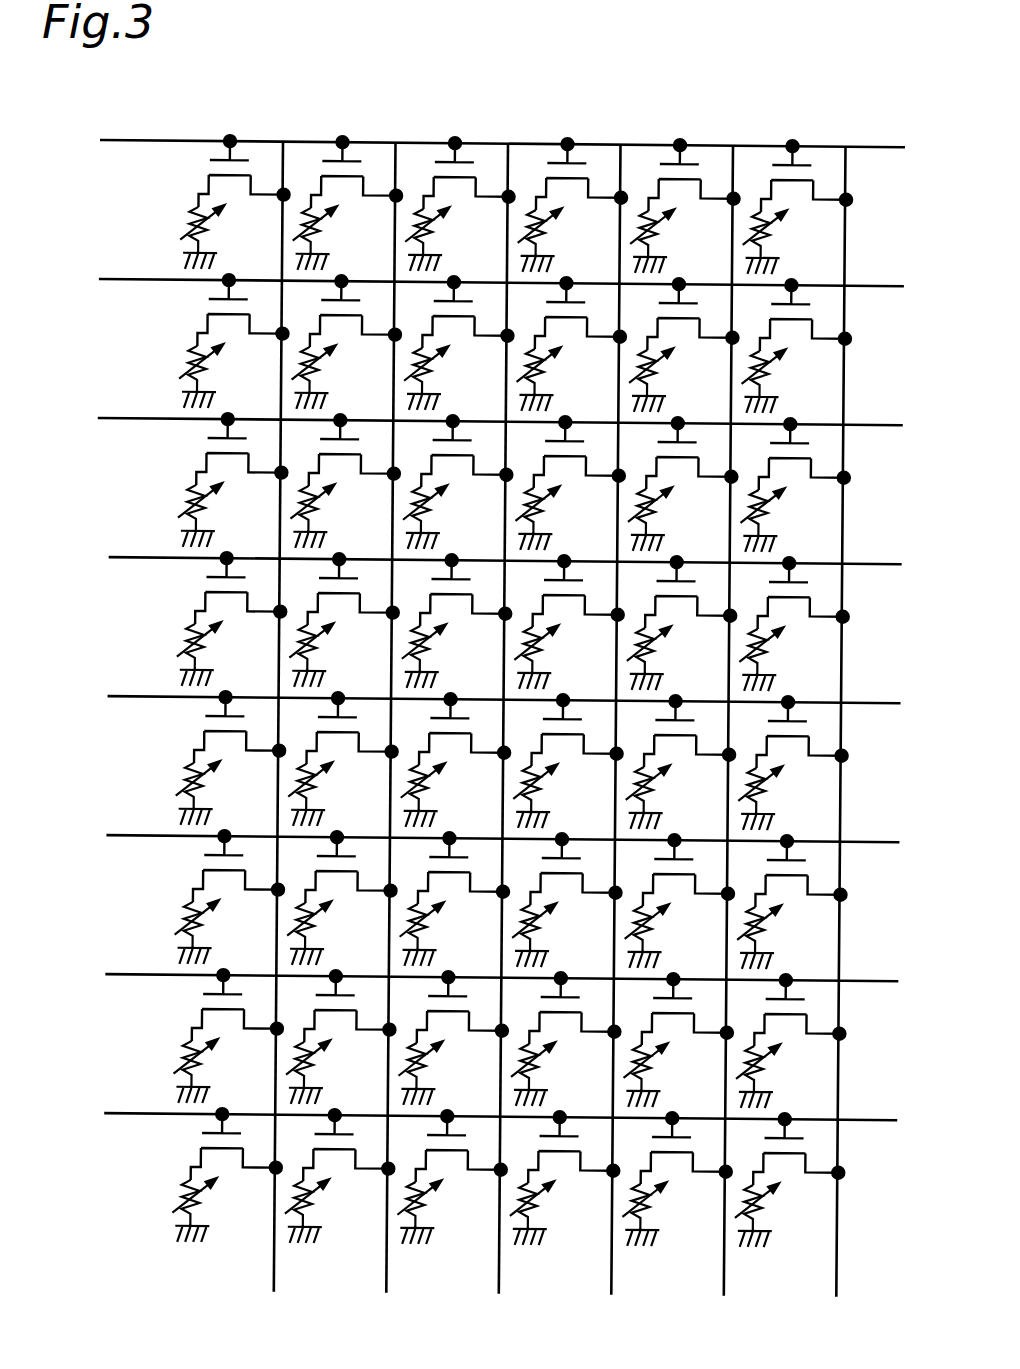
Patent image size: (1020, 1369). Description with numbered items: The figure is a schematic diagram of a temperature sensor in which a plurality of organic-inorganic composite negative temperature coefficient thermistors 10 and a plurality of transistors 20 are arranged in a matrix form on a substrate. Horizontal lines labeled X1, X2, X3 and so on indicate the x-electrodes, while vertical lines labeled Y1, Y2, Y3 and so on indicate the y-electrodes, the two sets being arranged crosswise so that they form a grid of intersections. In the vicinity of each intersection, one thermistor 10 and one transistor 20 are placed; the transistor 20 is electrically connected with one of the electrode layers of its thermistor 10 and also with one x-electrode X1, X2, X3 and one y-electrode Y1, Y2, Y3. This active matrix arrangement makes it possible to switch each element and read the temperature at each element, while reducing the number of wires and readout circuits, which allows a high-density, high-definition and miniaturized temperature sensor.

The organic-inorganic composite negative temperature coefficient thermistor 10 is at (166, 213).
The transistor 20 is at (194, 163).
The x-electrode X1 is at (484, 146).
The x-electrode X2 is at (483, 285).
The x-electrode X3 is at (482, 424).
The y-electrode Y1 is at (273, 731).
The y-electrode Y2 is at (385, 732).
The y-electrode Y3 is at (497, 733).